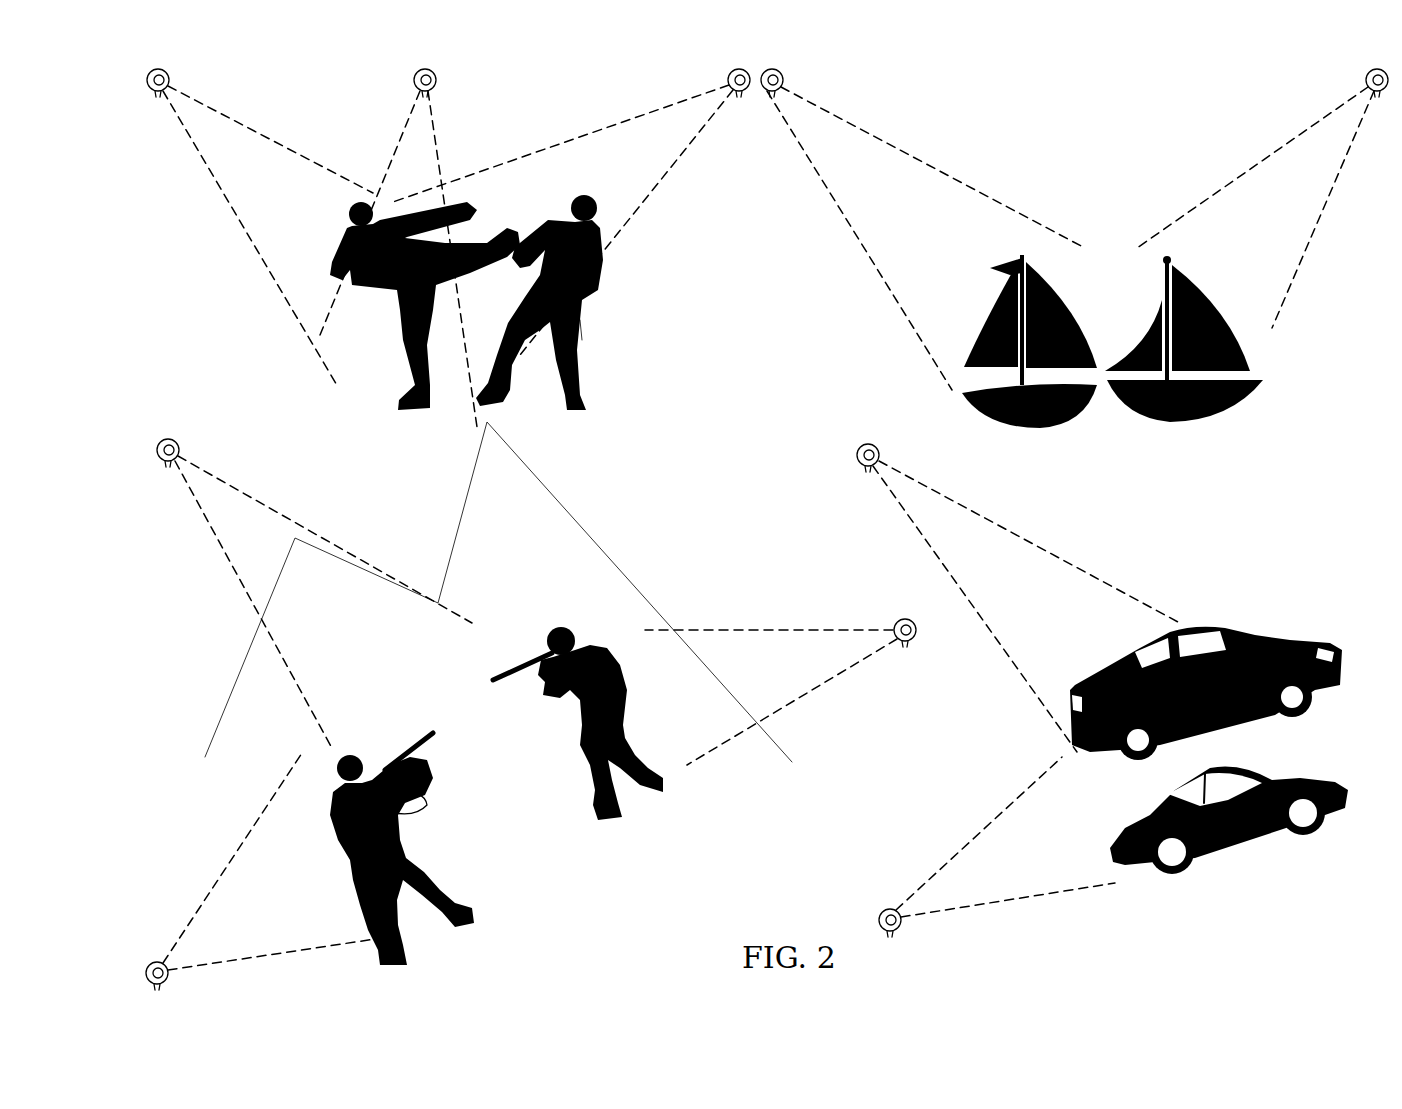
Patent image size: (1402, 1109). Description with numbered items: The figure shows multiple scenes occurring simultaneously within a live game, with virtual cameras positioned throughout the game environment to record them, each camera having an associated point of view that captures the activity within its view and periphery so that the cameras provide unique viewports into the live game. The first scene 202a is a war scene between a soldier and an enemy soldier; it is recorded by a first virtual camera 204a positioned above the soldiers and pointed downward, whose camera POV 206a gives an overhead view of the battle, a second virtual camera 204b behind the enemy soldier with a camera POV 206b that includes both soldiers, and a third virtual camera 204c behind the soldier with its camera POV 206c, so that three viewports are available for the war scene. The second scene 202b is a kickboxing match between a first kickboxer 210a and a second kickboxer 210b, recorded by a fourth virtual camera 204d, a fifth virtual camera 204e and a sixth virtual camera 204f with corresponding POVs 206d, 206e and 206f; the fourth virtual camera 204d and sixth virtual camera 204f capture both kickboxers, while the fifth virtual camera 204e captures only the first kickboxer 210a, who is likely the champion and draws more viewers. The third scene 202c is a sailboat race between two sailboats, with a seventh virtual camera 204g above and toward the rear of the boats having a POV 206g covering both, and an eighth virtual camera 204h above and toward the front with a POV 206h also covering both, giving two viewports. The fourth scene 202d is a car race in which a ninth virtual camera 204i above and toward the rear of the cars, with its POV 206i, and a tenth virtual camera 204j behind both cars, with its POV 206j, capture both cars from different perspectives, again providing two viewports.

The first scene 202a is at (610, 894).
The second scene 202b is at (668, 422).
The third scene 202c is at (1366, 439).
The fourth scene 202d is at (1314, 951).
The first virtual camera 204a is at (178, 438).
The second virtual camera 204b is at (162, 960).
The third virtual camera 204c is at (900, 645).
The fourth virtual camera 204d is at (156, 93).
The fifth virtual camera 204e is at (413, 80).
The sixth virtual camera 204f is at (727, 82).
The seventh virtual camera 204g is at (784, 82).
The eighth virtual camera 204h is at (1365, 78).
The ninth virtual camera 204i is at (880, 455).
The tenth virtual camera 204j is at (895, 933).
The camera POV 206a is at (230, 470).
The camera POV 206b is at (243, 836).
The camera POV 206c is at (840, 680).
The camera POV 206d is at (241, 228).
The camera POV 206e is at (405, 127).
The camera POV 206f is at (607, 118).
The camera POV 206g is at (870, 118).
The camera POV 206h is at (1300, 122).
The camera POV 206i is at (950, 491).
The camera POV 206j is at (965, 912).
The first kickboxer 210a is at (405, 325).
The second kickboxer 210b is at (578, 333).